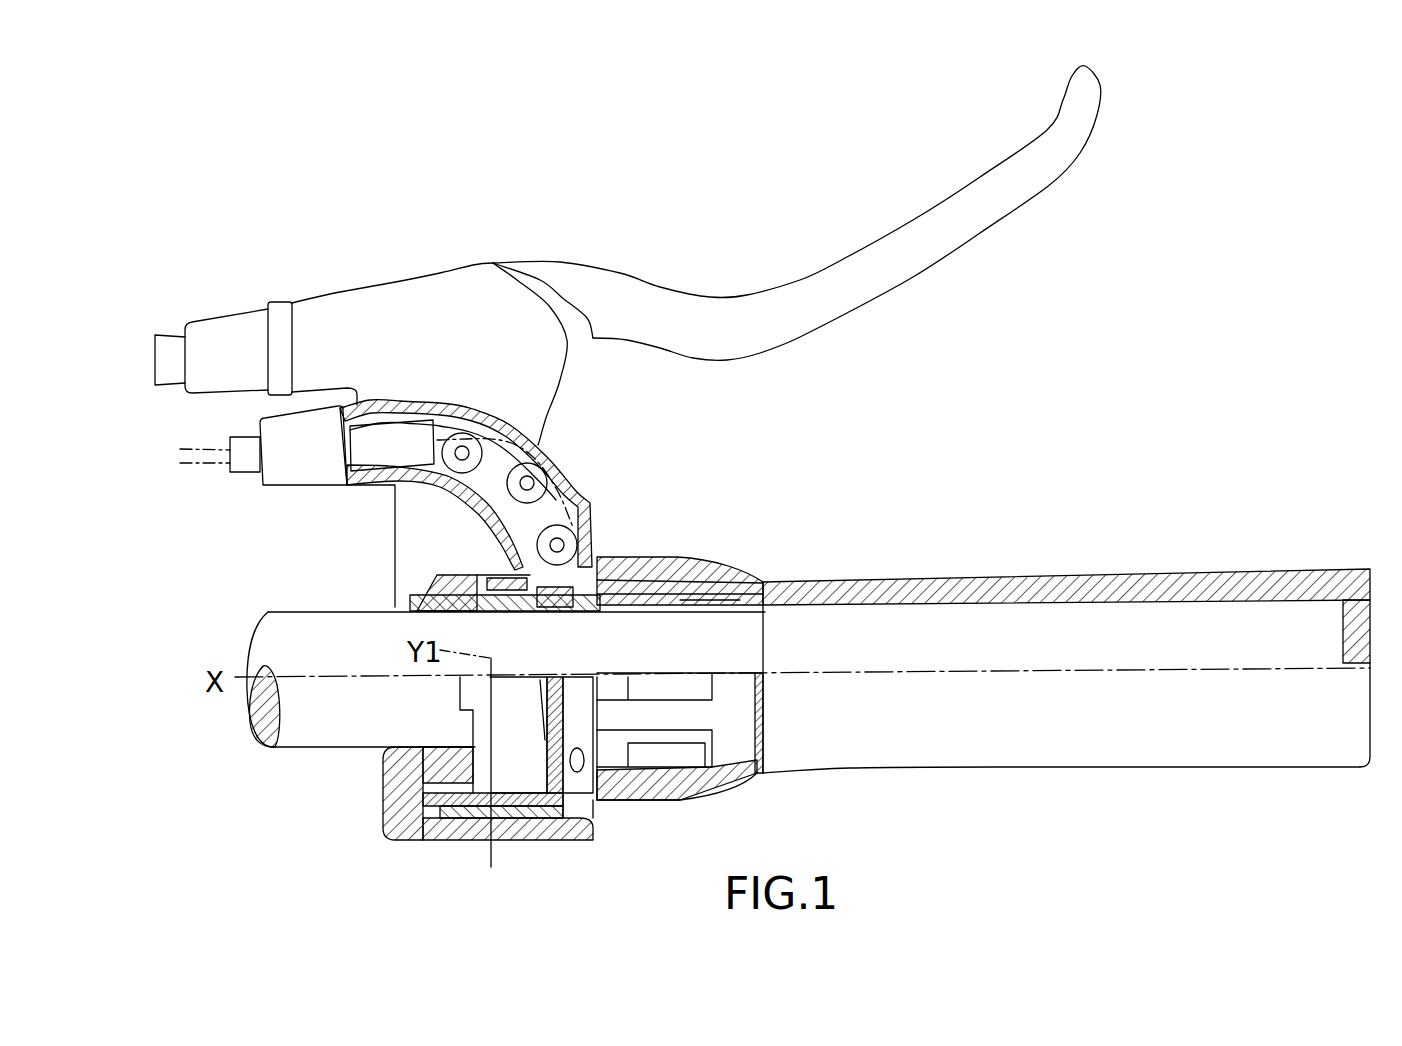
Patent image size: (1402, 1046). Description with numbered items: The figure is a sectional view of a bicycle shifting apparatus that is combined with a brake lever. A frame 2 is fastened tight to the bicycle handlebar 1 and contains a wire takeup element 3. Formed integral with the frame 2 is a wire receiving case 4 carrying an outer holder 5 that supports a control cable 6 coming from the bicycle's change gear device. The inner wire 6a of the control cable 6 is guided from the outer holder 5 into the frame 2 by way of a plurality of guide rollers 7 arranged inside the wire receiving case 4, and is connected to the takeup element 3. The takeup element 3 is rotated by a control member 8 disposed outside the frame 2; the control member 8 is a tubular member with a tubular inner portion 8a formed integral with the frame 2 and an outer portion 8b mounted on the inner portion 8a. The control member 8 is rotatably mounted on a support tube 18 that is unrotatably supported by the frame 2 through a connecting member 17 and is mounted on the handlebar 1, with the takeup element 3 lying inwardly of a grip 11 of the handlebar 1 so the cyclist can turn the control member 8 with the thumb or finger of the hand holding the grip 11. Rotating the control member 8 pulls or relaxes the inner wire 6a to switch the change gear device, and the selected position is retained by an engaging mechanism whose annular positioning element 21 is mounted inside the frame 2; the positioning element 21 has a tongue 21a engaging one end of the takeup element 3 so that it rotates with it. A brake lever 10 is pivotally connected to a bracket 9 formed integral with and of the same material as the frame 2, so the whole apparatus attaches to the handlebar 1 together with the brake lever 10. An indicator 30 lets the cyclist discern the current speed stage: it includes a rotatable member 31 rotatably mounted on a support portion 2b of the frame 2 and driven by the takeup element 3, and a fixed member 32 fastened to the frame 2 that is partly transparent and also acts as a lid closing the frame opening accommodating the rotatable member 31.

The bicycle handlebar 1 is at (292, 743).
The frame 2 is at (395, 553).
The support portion 2b is at (403, 763).
The wire takeup element 3 is at (600, 557).
The wire receiving case 4 is at (570, 460).
The outer holder 5 is at (297, 487).
The control cable 6 is at (240, 473).
The inner wire 6a is at (570, 493).
The guide rollers 7 is at (535, 540).
The control member 8 is at (803, 477).
The tubular inner portion 8a is at (680, 562).
The outer portion 8b is at (733, 573).
The bracket 9 is at (440, 275).
The brake lever 10 is at (887, 293).
The grip 11 is at (990, 580).
The connecting member 17 is at (433, 590).
The support tube 18 is at (707, 610).
The positioning element 21 is at (515, 690).
The tongue 21a is at (540, 680).
The indicator 30 is at (440, 843).
The rotatable member 31 is at (507, 827).
The fixed member 32 is at (383, 827).